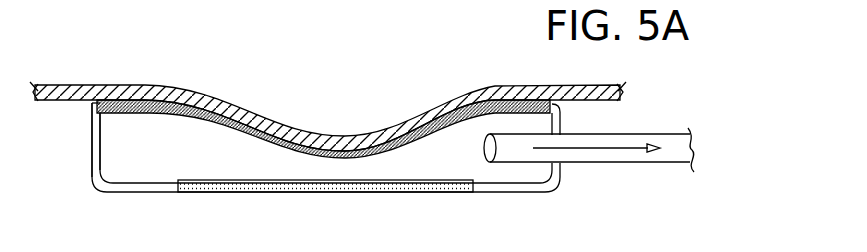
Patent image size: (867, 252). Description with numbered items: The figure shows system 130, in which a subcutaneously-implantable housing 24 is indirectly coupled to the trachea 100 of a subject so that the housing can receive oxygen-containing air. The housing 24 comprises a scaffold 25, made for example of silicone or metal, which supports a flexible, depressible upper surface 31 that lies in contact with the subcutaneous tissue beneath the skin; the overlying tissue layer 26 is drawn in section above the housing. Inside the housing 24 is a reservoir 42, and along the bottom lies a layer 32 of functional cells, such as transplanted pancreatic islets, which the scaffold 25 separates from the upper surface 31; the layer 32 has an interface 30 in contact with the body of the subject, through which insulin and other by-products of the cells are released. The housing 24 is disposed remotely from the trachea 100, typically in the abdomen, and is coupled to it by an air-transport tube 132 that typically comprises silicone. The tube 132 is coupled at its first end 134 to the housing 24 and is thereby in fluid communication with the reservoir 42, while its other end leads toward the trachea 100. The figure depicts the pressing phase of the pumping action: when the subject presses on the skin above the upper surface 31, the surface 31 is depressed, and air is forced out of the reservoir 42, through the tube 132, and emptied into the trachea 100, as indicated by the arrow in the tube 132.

The subcutaneously-implantable housing 24 is at (291, 173).
The scaffold 25 is at (95, 138).
The skin / tissue layer 26 is at (118, 85).
The interface 30 is at (256, 191).
The upper surface 31 is at (335, 92).
The layer of functional cells 32 is at (377, 185).
The reservoir 42 is at (139, 149).
The trachea 100 is at (764, 158).
The system 130 is at (328, 83).
The air-transport tube 132 is at (554, 128).
The first end 134 is at (488, 138).